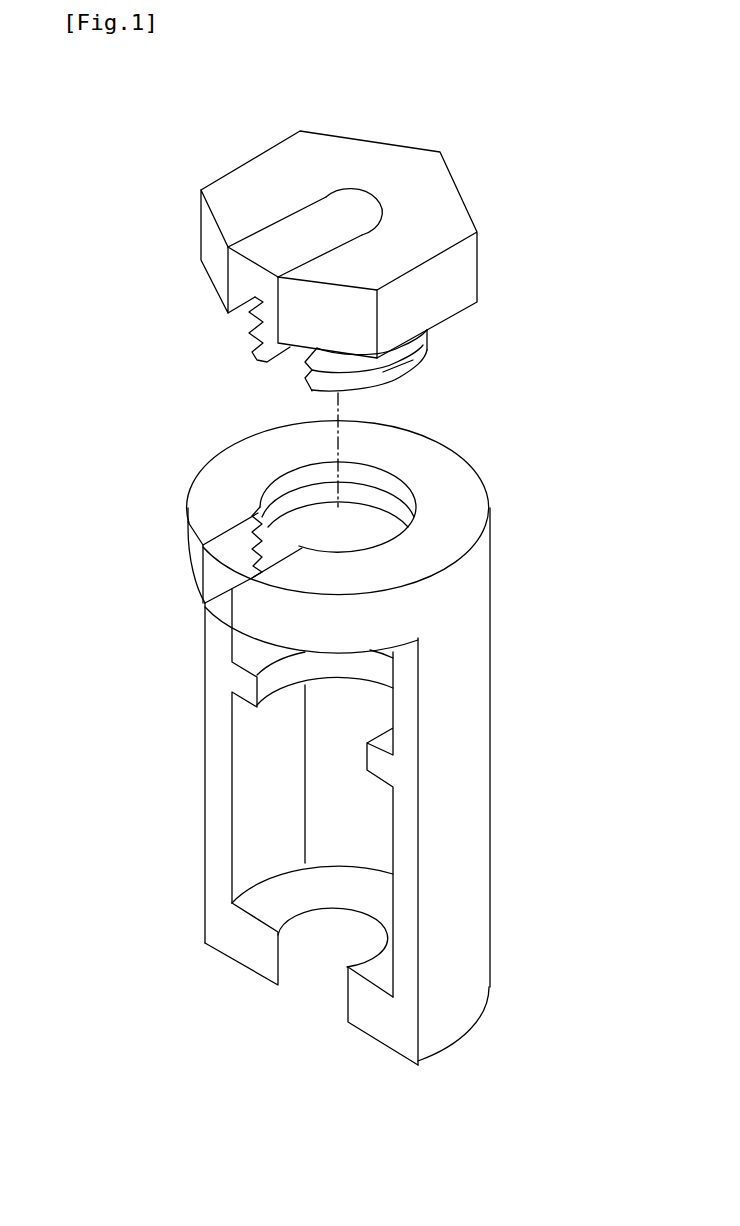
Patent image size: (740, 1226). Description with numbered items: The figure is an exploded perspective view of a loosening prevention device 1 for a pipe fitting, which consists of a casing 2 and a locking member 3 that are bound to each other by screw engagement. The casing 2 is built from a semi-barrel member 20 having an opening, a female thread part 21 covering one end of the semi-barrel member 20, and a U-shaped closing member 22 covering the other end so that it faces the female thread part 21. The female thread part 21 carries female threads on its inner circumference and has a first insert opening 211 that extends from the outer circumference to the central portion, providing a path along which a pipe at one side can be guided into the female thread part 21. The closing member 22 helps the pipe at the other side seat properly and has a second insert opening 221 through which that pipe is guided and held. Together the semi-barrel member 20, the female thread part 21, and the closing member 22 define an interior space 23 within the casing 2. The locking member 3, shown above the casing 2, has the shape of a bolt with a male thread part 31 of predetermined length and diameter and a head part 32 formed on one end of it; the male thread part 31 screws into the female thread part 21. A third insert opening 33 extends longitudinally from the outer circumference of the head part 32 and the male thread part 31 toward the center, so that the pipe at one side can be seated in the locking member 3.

The loosening prevention device 1 is at (124, 170).
The casing 2 is at (583, 540).
The semi-barrel member 20 is at (400, 820).
The female thread part 21 is at (438, 525).
The first insert opening 211 is at (226, 548).
The closing member 22 is at (367, 1008).
The second insert opening 221 is at (322, 943).
The interior space 23 is at (323, 797).
The locking member 3 is at (551, 207).
The male thread part 31 is at (383, 372).
The head part 32 is at (410, 205).
The third insert opening 33 is at (338, 223).